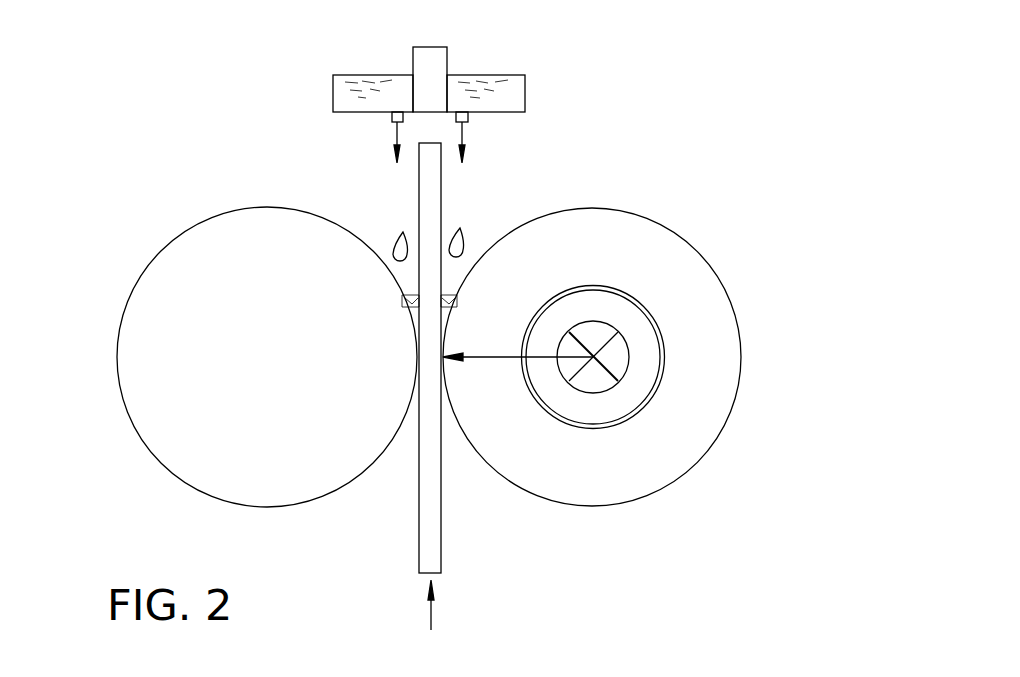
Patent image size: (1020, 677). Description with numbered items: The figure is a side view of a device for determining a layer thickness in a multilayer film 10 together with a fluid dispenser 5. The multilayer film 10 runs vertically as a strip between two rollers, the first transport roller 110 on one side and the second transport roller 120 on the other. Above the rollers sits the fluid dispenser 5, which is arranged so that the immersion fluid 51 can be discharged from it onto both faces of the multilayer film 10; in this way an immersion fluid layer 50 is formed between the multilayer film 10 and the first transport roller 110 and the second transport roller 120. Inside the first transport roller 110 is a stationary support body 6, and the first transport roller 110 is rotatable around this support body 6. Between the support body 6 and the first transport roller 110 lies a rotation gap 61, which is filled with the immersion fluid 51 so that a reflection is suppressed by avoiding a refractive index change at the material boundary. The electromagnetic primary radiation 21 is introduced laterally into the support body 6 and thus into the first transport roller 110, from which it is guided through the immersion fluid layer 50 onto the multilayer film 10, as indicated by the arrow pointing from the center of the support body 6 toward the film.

The fluid dispenser 5 is at (525, 92).
The multilayer film 10 is at (425, 190).
The second transport roller 120 is at (137, 283).
The first transport roller 110 is at (733, 396).
The rotation gap 61 is at (633, 300).
The support body 6 is at (640, 335).
The electromagnetic primary radiation 21 is at (483, 360).
The immersion fluid 51 is at (395, 245).
The immersion fluid layer 50 is at (452, 295).